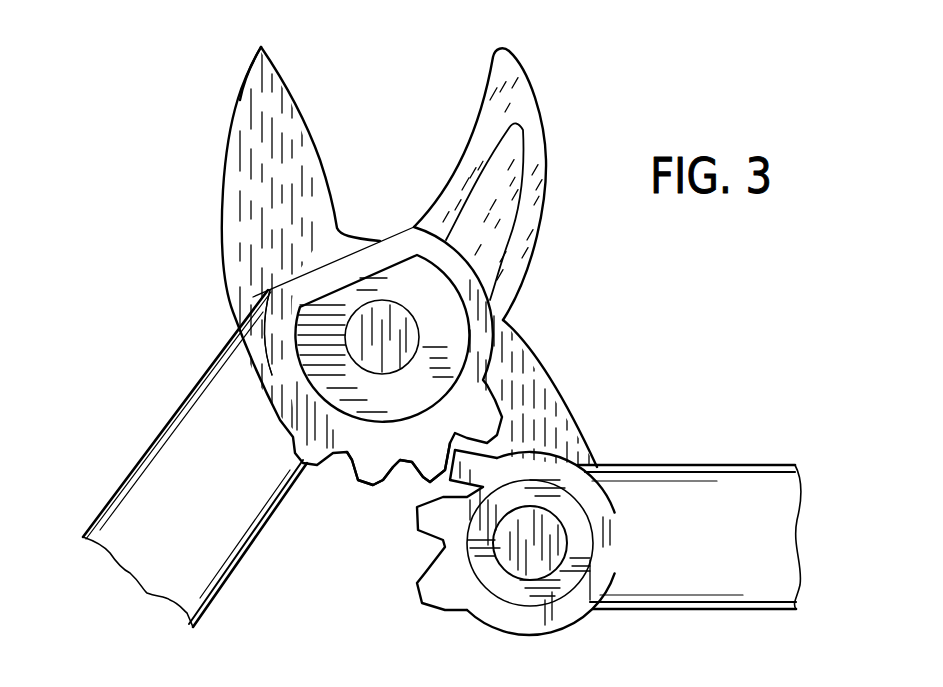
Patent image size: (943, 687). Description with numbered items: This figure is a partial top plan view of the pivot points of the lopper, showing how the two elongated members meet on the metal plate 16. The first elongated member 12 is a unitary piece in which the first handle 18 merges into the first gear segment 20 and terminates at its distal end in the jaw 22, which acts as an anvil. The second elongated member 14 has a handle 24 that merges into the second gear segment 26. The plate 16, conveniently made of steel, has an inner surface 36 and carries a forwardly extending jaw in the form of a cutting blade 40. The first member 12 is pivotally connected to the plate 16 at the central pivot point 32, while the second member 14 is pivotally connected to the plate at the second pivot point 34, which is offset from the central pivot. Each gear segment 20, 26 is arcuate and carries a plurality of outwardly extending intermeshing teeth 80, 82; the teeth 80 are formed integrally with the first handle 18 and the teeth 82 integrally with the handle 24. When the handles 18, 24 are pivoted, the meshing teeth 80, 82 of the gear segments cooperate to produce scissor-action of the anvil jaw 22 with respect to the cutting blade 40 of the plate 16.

The first elongated member 12 is at (363, 337).
The second elongated member 14 is at (588, 366).
The metal plate 16 is at (230, 115).
The first handle 18 is at (181, 467).
The first gear segment 20 is at (423, 293).
The jaw 22 is at (523, 117).
The handle 24 is at (764, 503).
The second gear segment 26 is at (496, 560).
The central pivot point 32 is at (442, 337).
The second pivot point 34 is at (554, 595).
The inner surface 36 is at (247, 217).
The cutting blade 40 is at (264, 64).
The teeth 80 is at (407, 485).
The teeth 82 is at (437, 527).